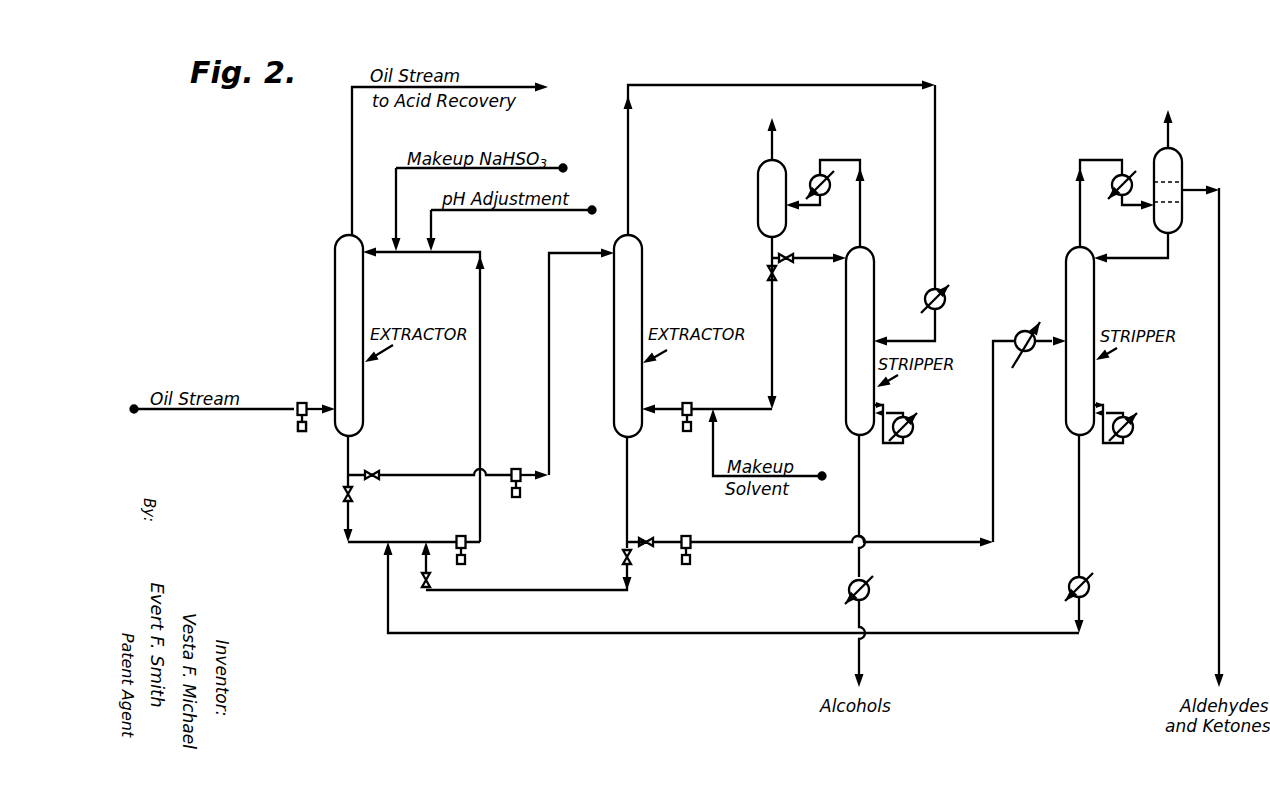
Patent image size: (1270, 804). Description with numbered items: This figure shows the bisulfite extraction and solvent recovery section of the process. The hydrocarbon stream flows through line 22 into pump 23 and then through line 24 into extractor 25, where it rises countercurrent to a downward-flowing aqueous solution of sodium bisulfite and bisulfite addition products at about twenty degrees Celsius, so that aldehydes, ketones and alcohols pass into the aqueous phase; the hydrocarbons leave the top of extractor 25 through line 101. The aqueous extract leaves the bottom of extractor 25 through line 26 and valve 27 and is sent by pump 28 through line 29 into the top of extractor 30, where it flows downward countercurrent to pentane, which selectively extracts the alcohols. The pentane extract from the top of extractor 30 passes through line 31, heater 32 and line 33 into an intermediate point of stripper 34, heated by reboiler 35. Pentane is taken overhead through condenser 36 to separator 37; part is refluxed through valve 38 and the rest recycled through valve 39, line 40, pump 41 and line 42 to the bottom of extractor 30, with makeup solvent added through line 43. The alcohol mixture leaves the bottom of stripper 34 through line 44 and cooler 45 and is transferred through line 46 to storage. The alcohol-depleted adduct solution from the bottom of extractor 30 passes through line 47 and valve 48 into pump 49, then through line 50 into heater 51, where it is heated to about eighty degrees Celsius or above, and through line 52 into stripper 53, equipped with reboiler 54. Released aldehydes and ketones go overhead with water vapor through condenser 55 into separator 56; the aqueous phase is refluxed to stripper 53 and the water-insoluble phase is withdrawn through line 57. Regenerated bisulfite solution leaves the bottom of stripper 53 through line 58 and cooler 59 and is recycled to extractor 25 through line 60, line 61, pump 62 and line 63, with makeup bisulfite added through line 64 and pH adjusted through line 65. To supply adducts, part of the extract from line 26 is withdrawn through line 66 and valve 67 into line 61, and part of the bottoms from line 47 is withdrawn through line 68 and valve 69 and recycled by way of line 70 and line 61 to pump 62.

The line 101 is at (351, 121).
The line 64 is at (396, 215).
The line 65 is at (431, 220).
The extractor 25 is at (335, 300).
The line 22 is at (168, 413).
The line 24 is at (305, 402).
The pump 23 is at (297, 428).
The line 26 is at (348, 450).
The valve 27 is at (374, 472).
The line 66 is at (342, 492).
The valve 67 is at (345, 505).
The line 63 is at (479, 420).
The pump 28 is at (516, 502).
The line 29 is at (548, 393).
The extractor 30 is at (614, 305).
The line 31 is at (785, 85).
The heater 32 is at (946, 299).
The line 33 is at (922, 341).
The stripper 34 is at (875, 268).
The separator 37 is at (787, 165).
The condenser 36 is at (830, 188).
The valve 38 is at (790, 266).
The valve 39 is at (768, 279).
The line 40 is at (772, 385).
The pump 41 is at (690, 402).
The line 42 is at (658, 406).
The line 43 is at (810, 479).
The reboiler 35 is at (914, 427).
The line 44 is at (861, 490).
The cooler 45 is at (871, 590).
The line 46 is at (860, 655).
The line 47 is at (628, 490).
The valve 48 is at (636, 540).
The pump 49 is at (687, 569).
The line 50 is at (945, 540).
The heater 51 is at (1012, 368).
The line 52 is at (1047, 336).
The stripper 53 is at (1066, 293).
The condenser 55 is at (1127, 170).
The separator 56 is at (1183, 162).
The line 57 is at (1221, 440).
The reboiler 54 is at (1134, 427).
The line 58 is at (1080, 490).
The cooler 59 is at (1090, 587).
The line 60 is at (388, 598).
The line 61 is at (420, 540).
The pump 62 is at (467, 562).
The line 68 is at (545, 592).
The valve 69 is at (424, 588).
The line 70 is at (426, 560).